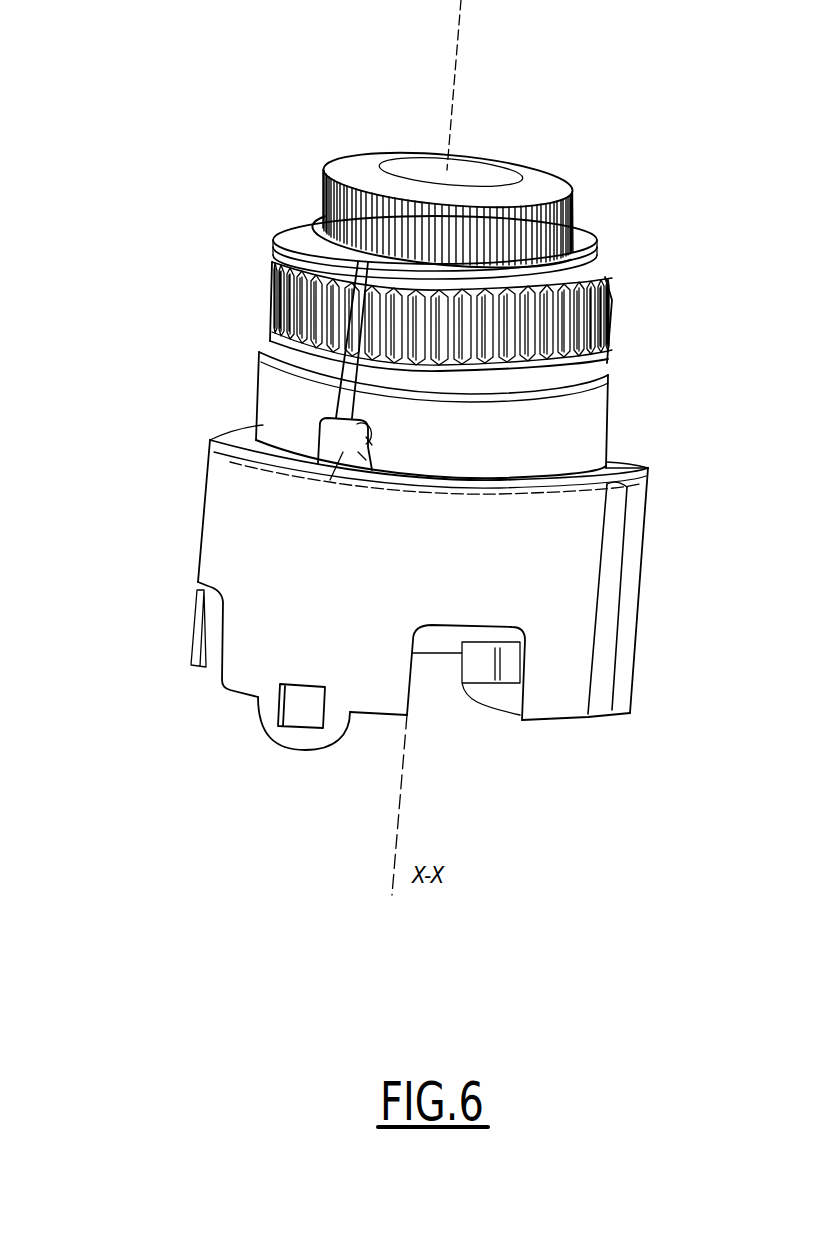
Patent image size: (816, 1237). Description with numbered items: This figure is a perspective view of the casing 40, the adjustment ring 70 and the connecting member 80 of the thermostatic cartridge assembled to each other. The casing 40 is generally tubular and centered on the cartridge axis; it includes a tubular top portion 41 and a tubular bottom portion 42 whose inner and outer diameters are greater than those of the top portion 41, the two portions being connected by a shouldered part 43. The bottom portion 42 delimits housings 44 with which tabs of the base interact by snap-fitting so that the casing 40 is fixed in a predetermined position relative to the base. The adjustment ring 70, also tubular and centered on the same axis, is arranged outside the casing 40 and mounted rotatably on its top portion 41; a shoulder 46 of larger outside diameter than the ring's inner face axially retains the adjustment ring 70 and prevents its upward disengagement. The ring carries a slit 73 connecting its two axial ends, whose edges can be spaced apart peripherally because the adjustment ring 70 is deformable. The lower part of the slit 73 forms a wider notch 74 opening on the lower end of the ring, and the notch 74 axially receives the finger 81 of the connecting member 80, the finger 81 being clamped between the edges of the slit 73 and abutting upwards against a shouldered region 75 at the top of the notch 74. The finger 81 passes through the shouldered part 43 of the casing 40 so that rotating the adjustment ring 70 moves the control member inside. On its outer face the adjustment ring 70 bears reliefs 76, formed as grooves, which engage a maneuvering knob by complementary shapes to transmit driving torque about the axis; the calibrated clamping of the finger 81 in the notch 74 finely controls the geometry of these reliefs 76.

The casing 40 is at (180, 622).
The top portion 41 is at (576, 222).
The bottom portion 42 is at (627, 648).
The shouldered part 43 is at (626, 468).
The housing 44 is at (298, 703).
The shoulder 46 is at (597, 262).
The adjustment ring 70 is at (250, 391).
The slit 73 is at (350, 323).
The notch 74 is at (362, 458).
The shouldered region 75 is at (372, 443).
The reliefs 76 is at (606, 335).
The connecting member 80 is at (318, 442).
The finger 81 is at (343, 452).